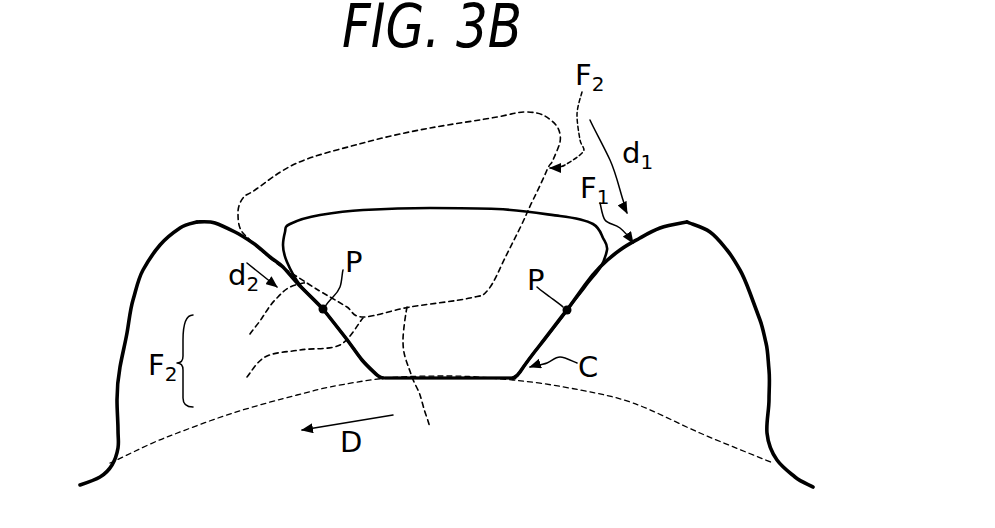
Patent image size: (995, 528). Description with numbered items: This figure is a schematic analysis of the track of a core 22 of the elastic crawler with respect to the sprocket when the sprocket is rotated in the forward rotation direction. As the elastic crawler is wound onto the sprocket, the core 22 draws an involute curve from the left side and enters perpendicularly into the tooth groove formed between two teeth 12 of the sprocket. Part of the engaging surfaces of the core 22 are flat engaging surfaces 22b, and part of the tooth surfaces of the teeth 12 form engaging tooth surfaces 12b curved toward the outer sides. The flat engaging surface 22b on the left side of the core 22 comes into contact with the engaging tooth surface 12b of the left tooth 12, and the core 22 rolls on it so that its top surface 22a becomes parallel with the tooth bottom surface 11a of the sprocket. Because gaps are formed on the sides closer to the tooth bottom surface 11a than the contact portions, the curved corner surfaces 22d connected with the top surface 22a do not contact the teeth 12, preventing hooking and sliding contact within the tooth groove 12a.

The tooth 12 is at (173, 307).
The groove 12a is at (543, 367).
The engaging tooth surface 12b is at (253, 243).
The tooth bottom surface 11a is at (470, 378).
The core 22 is at (400, 173).
The top surface 22a is at (437, 377).
The flat engaging surface 22b is at (320, 300).
The corner surface 22d is at (383, 378).